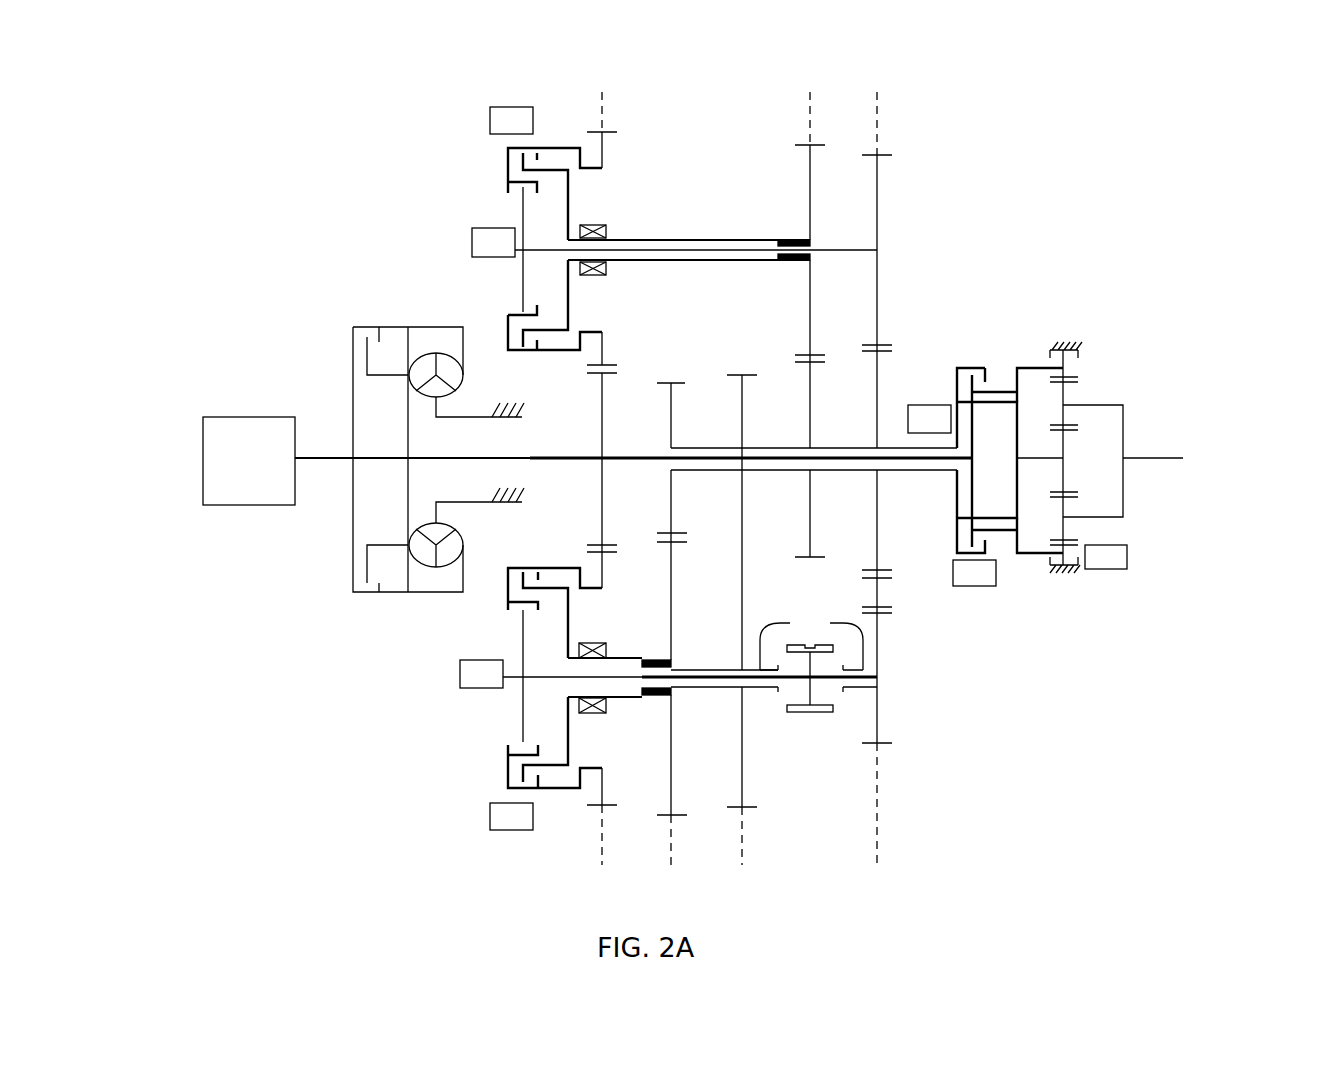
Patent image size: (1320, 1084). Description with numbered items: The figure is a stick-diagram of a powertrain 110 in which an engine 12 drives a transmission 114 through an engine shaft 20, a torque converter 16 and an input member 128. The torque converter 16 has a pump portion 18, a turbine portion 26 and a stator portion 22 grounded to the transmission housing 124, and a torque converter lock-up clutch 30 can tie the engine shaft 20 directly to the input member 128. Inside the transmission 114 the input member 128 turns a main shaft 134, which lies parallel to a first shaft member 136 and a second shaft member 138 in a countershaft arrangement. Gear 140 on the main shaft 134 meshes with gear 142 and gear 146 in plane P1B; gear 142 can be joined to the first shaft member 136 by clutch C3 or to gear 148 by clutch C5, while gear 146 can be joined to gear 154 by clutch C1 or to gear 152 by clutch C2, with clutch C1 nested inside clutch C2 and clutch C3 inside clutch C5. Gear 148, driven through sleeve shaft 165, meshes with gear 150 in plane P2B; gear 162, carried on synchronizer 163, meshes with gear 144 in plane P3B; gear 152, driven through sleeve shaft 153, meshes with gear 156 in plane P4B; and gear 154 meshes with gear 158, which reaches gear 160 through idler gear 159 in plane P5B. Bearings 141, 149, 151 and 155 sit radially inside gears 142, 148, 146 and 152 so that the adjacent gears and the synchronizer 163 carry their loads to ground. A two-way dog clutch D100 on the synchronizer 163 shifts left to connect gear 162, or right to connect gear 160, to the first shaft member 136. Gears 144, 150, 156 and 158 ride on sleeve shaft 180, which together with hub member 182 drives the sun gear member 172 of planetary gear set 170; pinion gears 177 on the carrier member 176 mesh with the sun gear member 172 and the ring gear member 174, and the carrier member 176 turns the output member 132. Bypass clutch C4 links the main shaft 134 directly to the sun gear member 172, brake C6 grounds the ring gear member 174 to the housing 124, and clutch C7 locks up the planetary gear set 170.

The powertrain 110 is at (343, 183).
The engine 12 is at (249, 461).
The engine shaft 20 is at (324, 470).
The torque converter lock-up clutch 30 is at (372, 403).
The torque converter 16 is at (405, 312).
The turbine portion 26 is at (424, 348).
The pump portion 18 is at (456, 372).
The stator portion 22 is at (442, 401).
The transmission housing 124 is at (500, 505).
The transmission 114 is at (490, 288).
The input member 128 is at (592, 452).
The main shaft 134 is at (625, 461).
The gear 140 is at (605, 448).
The gear 142 is at (606, 556).
The gear 146 is at (608, 362).
The bearing 151 is at (595, 223).
The gear 152 is at (808, 222).
The sleeve shaft 153 is at (775, 237).
The second shaft member 138 is at (850, 248).
The gear 154 is at (878, 225).
The bearing 155 is at (812, 260).
The gear 158 is at (878, 410).
The gear 150 is at (673, 432).
The gear 144 is at (744, 432).
The gear 156 is at (812, 430).
The gear 148 is at (673, 560).
The idler gear 159 is at (879, 590).
The gear 160 is at (880, 622).
The sleeve shaft 180 is at (910, 472).
The bearing 141 is at (584, 645).
The sleeve shaft 165 is at (630, 700).
The bearing 149 is at (674, 692).
The gear 162 is at (740, 603).
The first shaft member 136 is at (722, 682).
The synchronizer 163 is at (818, 651).
The two-way dog clutch D100 is at (810, 712).
The ring gear member 174 is at (1073, 372).
The pinion gears 177 is at (1058, 386).
The sun gear member 172 is at (1068, 436).
The hub member 182 is at (1020, 481).
The carrier member 176 is at (1113, 518).
The output member 132 is at (1150, 458).
The planetary gear set 170 is at (1152, 546).
The clutch C1 is at (674, 251).
The clutch C2 is at (546, 228).
The clutch C3 is at (551, 680).
The bypass clutch C4 is at (962, 460).
The clutch C5 is at (553, 716).
The brake C6 is at (1106, 557).
The clutch C7 is at (1008, 477).
The plane P1B is at (601, 477).
The plane P2B is at (671, 881).
The plane P3B is at (742, 881).
The plane P4B is at (810, 73).
The plane P5B is at (877, 477).